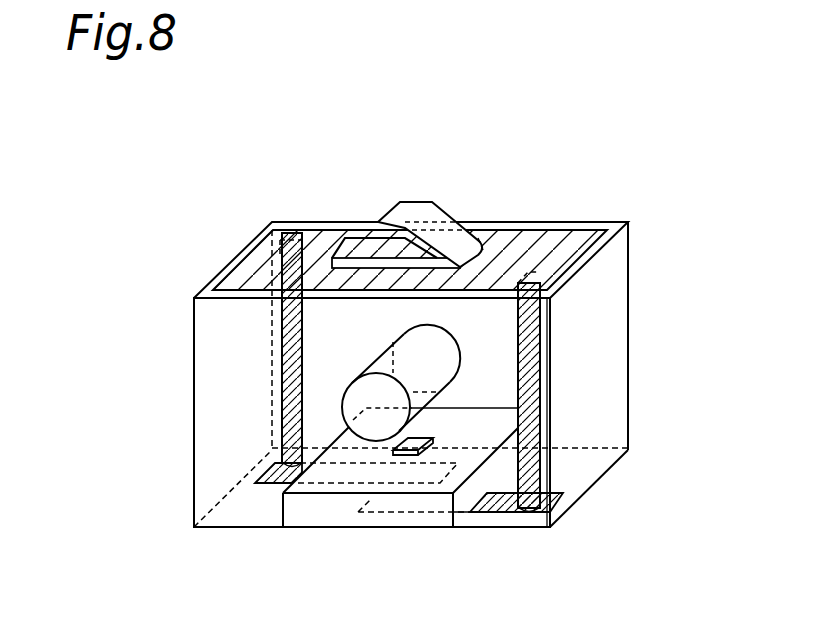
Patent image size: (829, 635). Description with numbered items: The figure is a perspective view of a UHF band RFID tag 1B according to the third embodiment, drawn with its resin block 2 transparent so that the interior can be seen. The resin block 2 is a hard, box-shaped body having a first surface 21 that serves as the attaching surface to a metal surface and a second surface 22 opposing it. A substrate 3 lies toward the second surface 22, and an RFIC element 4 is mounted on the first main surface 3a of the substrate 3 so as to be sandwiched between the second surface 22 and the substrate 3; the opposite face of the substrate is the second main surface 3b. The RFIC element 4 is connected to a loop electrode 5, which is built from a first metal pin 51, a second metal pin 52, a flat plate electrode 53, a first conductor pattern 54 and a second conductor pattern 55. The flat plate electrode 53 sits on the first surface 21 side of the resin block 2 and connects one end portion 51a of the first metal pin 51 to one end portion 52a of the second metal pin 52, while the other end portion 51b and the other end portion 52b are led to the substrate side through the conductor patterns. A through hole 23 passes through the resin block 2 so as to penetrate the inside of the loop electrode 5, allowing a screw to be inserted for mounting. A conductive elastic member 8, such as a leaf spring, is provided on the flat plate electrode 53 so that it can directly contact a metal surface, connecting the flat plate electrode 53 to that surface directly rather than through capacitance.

The UHF band RFID tag 1B is at (210, 128).
The resin block 2 is at (610, 306).
The first surface 21 is at (618, 222).
The second surface 22 is at (613, 465).
The through hole 23 is at (380, 353).
The substrate 3 is at (337, 512).
The first main surface 3a is at (447, 513).
The second main surface 3b is at (393, 528).
The RFIC element 4 is at (408, 452).
The loop electrode 5 is at (561, 397).
The first metal pin 51 is at (282, 373).
The one end portion of the first metal pin 51a is at (268, 222).
The another end portion of the first metal pin 51b is at (276, 494).
The second metal pin 52 is at (532, 355).
The one end portion of the second metal pin 52a is at (528, 280).
The another end portion of the second metal pin 52b is at (528, 514).
The flat plate electrode 53 is at (330, 243).
The first conductor pattern 54 is at (258, 465).
The second conductor pattern 55 is at (502, 511).
The elastic member 8 is at (408, 203).